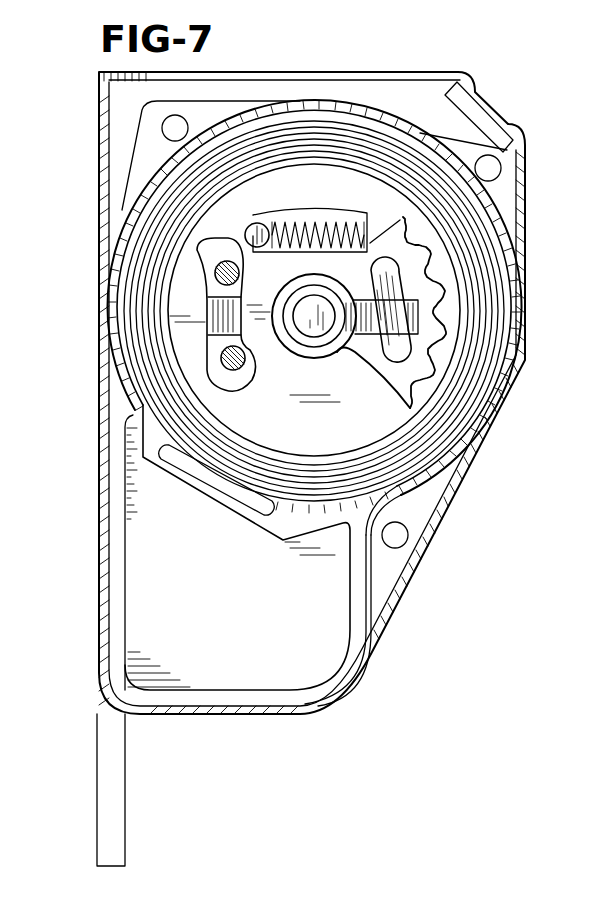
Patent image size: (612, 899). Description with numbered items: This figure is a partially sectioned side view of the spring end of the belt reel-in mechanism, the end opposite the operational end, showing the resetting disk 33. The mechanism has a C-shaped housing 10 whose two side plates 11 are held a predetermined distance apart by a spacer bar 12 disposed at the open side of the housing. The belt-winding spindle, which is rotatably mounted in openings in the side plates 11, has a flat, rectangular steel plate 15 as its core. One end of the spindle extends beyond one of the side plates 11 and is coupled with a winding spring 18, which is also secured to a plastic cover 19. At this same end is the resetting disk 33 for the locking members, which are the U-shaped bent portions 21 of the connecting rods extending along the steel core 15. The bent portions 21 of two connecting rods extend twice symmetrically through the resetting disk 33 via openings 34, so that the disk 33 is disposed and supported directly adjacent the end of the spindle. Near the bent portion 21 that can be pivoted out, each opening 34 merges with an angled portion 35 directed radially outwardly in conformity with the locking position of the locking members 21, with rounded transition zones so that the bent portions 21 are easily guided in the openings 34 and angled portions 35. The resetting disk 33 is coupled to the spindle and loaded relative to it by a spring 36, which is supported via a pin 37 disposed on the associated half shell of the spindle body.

The housing 10 is at (99, 153).
The side plate 11 is at (452, 250).
The spacer bar 12 is at (482, 112).
The steel plate 15 is at (363, 337).
The winding spring 18 is at (477, 384).
The plastic cover 19 is at (350, 103).
The bent portion 21 is at (450, 346).
The resetting disk 33 is at (336, 437).
The opening 34 is at (233, 405).
The angled portion 35 is at (198, 268).
The spring 36 is at (313, 224).
The pin 37 is at (253, 224).